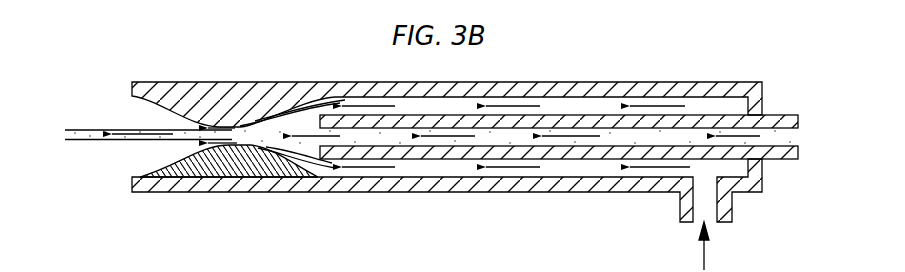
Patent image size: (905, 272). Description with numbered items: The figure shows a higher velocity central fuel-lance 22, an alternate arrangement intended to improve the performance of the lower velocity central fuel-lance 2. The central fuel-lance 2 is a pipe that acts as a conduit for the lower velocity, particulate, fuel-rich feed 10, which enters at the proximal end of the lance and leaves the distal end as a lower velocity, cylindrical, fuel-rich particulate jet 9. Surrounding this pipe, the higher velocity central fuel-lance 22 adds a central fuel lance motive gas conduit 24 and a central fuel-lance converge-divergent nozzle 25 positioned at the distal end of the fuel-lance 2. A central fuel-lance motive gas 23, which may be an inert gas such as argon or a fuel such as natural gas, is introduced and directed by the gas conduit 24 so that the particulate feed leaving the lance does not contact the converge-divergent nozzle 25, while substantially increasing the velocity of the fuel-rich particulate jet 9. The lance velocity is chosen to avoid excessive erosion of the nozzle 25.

The central fuel-lance 2 is at (773, 117).
The fuel-rich particulate jet 9 is at (120, 130).
The fuel-rich feed 10 is at (808, 140).
The higher velocity central fuel-lance 22 is at (668, 88).
The central fuel-lance motive gas 23 is at (548, 102).
The central fuel lance motive gas conduit 24 is at (437, 102).
The central fuel-lance converge-divergent nozzle 25 is at (236, 105).